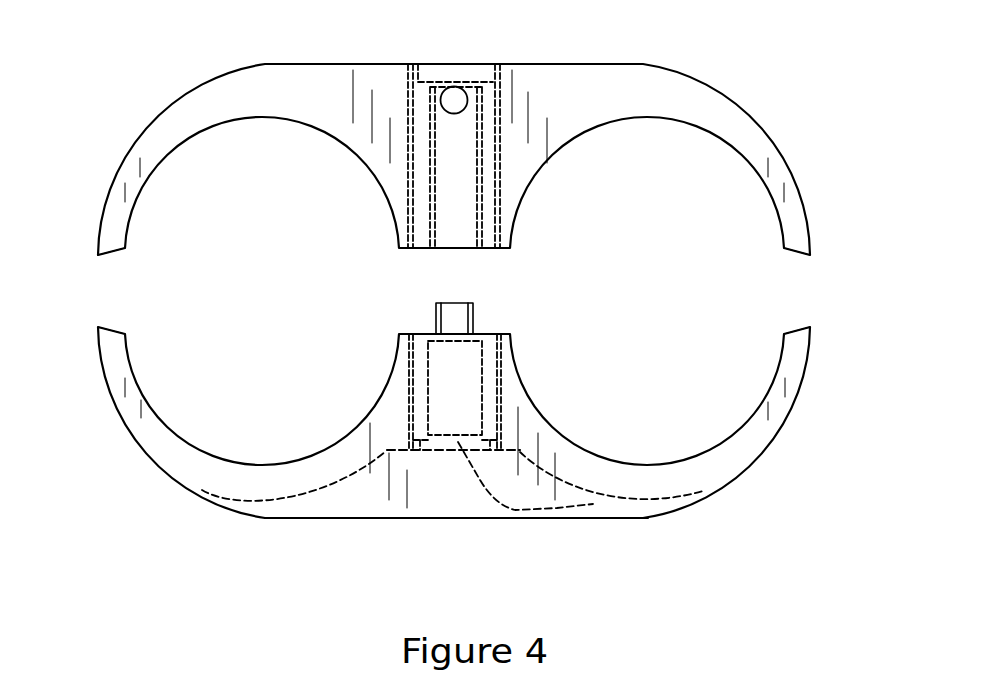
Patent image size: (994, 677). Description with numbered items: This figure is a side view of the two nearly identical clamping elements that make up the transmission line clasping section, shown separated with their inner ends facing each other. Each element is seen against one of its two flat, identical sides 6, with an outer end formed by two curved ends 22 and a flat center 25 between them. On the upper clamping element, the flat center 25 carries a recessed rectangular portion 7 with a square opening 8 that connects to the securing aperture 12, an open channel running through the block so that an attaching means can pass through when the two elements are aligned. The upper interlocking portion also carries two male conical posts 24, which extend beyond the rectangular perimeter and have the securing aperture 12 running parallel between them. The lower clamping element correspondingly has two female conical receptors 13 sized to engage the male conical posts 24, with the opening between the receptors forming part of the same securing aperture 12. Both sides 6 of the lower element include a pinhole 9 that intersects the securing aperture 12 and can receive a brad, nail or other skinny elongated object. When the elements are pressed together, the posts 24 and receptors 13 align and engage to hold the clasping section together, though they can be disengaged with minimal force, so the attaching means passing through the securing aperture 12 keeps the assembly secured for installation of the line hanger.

The sides 6 is at (283, 78).
The curved ends 22 is at (112, 147).
The securing aperture 12 is at (488, 182).
The female conical receptors 13 is at (457, 228).
The pinhole 9 is at (453, 99).
The male conical posts 24 is at (475, 311).
The recessed rectangular portion 7 is at (520, 452).
The square opening 8 is at (593, 504).
The flat center 25 is at (638, 520).